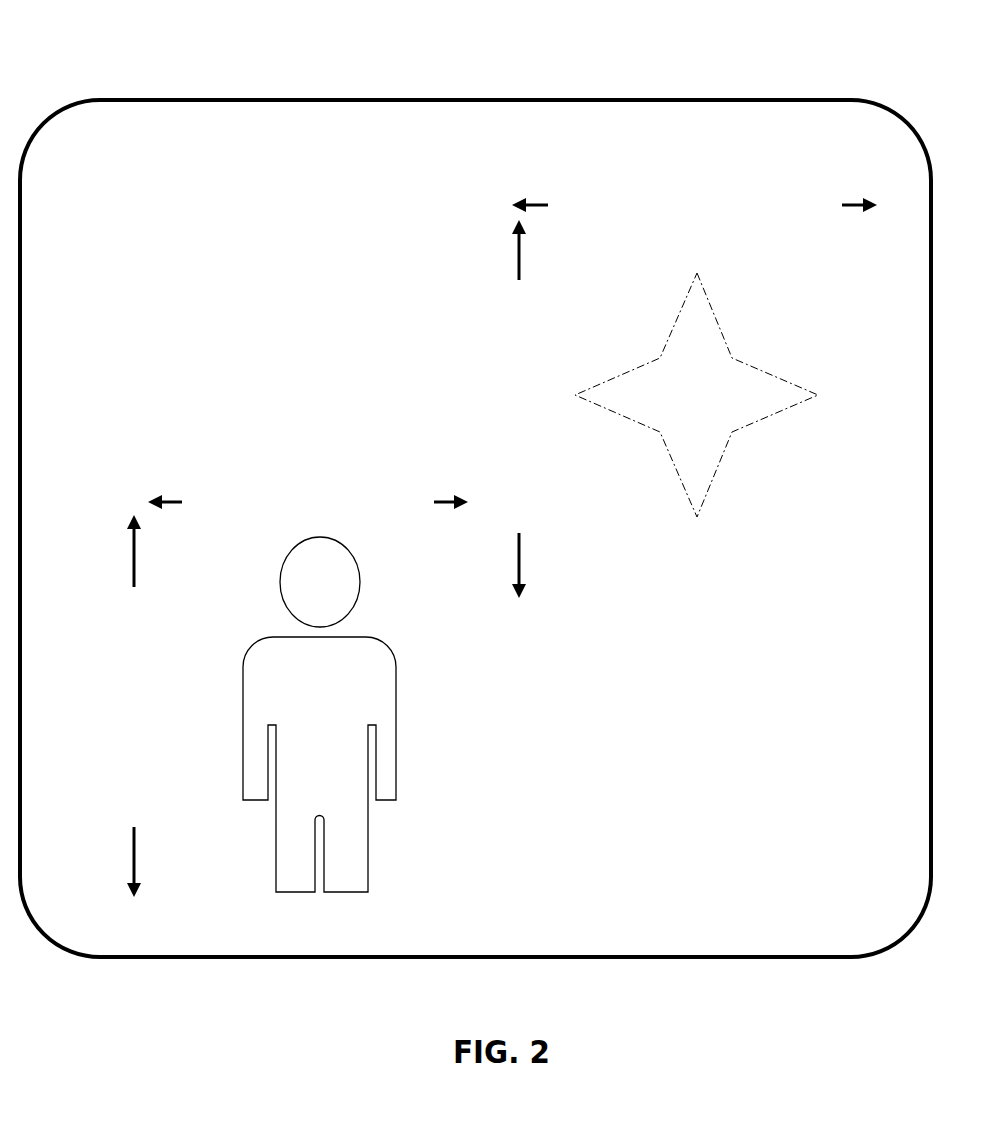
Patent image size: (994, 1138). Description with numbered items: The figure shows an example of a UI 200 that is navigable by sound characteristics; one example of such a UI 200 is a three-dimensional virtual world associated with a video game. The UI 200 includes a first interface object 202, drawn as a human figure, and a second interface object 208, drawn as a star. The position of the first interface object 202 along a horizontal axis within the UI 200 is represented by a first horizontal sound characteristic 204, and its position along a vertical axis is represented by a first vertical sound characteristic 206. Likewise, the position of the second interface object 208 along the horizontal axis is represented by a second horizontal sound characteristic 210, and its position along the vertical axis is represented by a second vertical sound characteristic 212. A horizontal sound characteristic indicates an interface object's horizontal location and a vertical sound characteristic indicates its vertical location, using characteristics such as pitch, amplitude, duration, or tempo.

The UI 200 is at (84, 95).
The first interface object 202 is at (343, 929).
The first horizontal sound characteristic 204 is at (230, 513).
The first vertical sound characteristic 206 is at (160, 642).
The second interface object 208 is at (720, 407).
The second horizontal sound characteristic 210 is at (598, 217).
The second vertical sound characteristic 212 is at (542, 324).